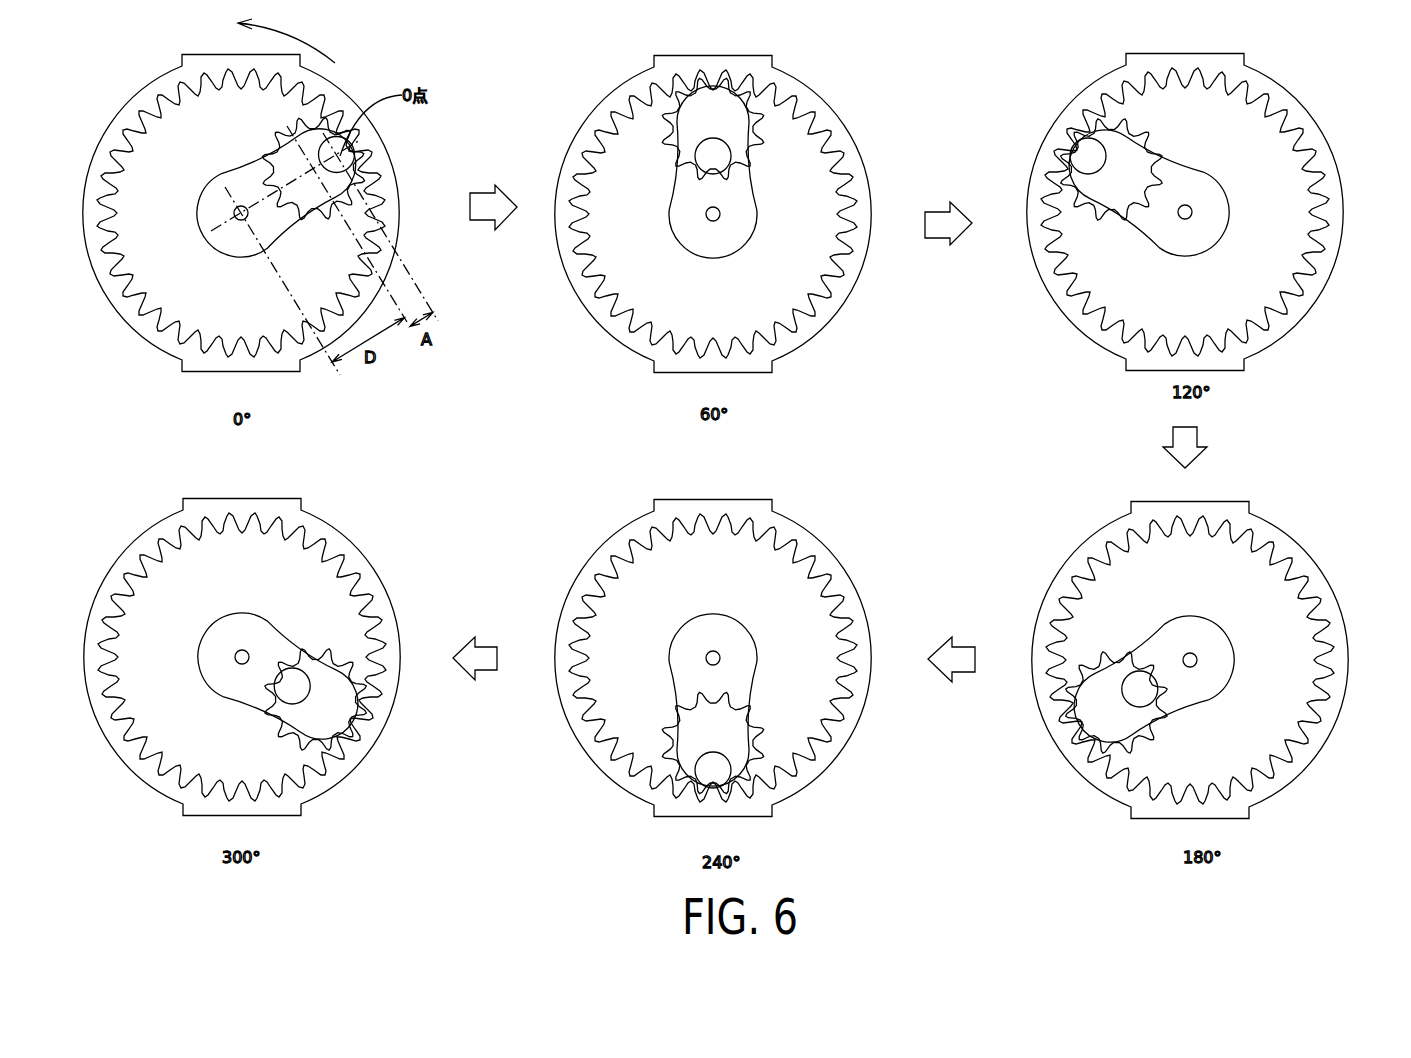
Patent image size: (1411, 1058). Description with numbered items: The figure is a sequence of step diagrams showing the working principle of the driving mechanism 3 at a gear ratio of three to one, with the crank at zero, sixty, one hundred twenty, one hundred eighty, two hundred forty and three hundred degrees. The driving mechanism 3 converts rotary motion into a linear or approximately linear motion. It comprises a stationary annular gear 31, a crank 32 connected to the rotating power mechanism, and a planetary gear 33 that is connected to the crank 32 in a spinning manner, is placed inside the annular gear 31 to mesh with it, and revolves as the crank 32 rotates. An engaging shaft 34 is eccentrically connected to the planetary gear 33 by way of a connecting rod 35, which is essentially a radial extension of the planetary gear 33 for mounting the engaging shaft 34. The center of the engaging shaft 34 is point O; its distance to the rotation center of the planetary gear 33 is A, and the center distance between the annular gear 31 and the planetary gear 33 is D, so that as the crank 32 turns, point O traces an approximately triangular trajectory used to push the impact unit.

The driving mechanism 3 is at (392, 145).
The stationary annular gear 31 is at (402, 217).
The crank 32 is at (227, 243).
The planetary gear 33 is at (325, 100).
The engaging shaft 34 is at (362, 160).
The connecting rod 35 is at (368, 188).